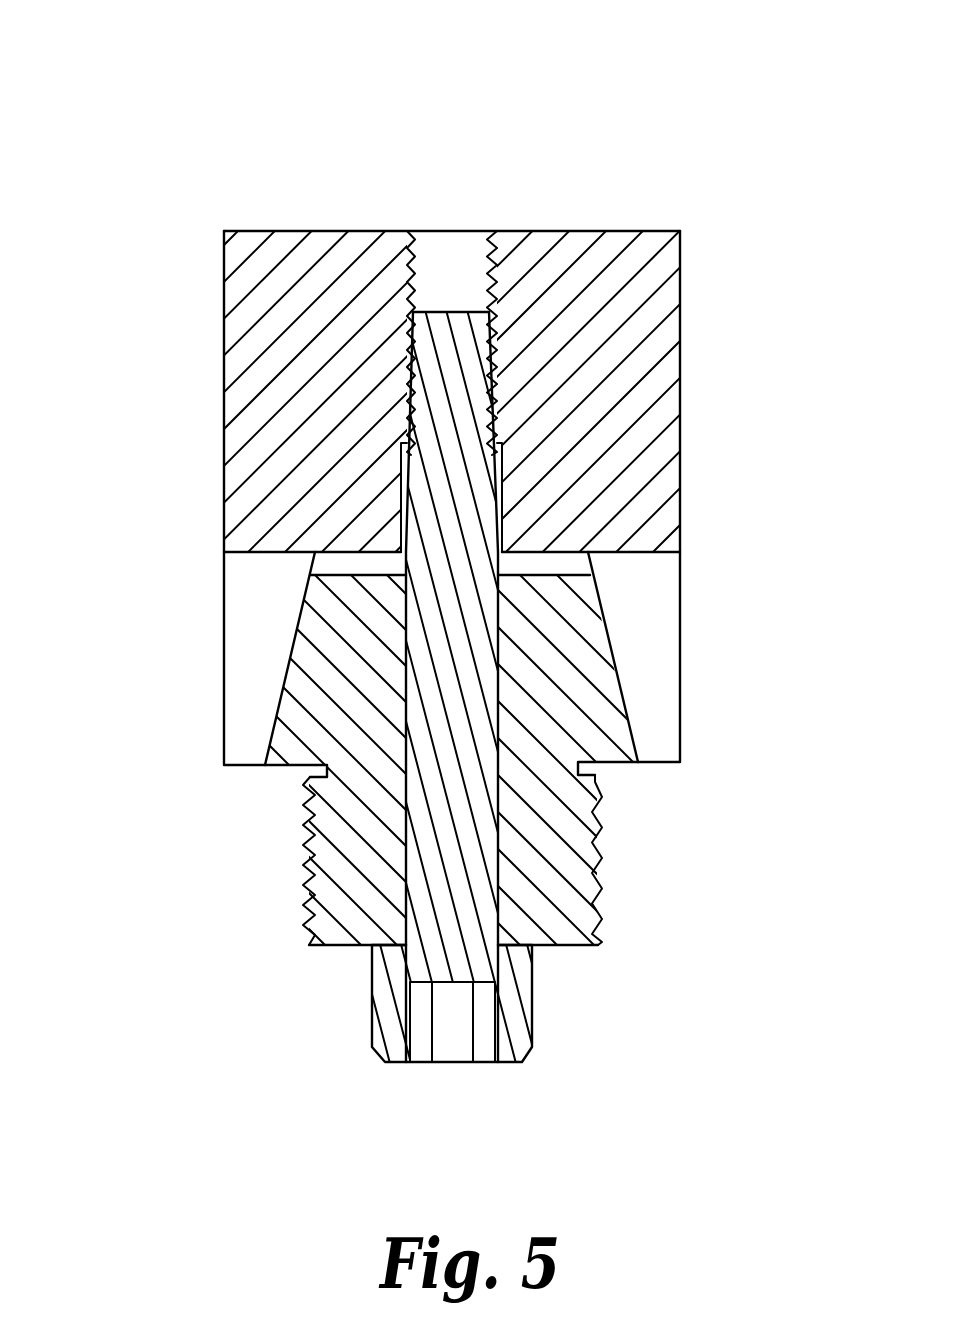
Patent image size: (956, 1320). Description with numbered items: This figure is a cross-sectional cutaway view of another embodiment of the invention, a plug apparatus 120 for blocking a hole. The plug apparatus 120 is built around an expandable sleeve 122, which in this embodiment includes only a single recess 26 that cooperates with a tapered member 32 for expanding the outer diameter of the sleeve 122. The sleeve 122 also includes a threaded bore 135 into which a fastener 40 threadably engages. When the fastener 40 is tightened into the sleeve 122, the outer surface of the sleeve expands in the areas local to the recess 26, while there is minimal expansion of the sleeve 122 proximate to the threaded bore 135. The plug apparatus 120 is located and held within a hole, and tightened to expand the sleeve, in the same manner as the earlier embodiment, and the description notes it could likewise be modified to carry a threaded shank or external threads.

The plug apparatus 120 is at (718, 155).
The expandable sleeve 122 is at (642, 403).
The threaded bore 135 is at (408, 510).
The recess 26 is at (617, 648).
The tapered member 32 is at (595, 718).
The fastener 40 is at (518, 1013).